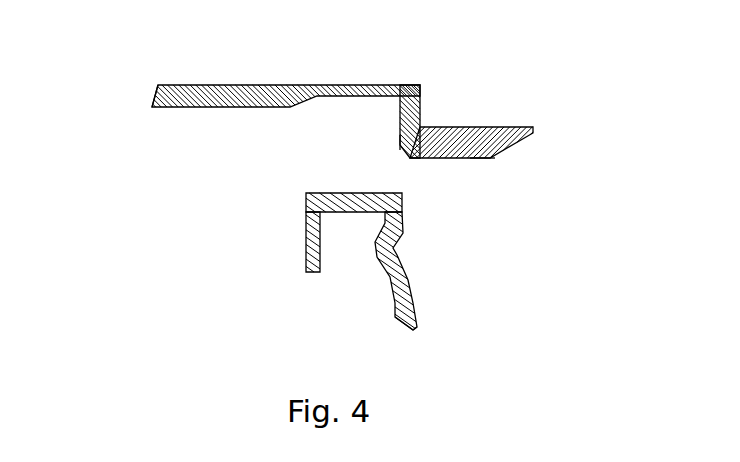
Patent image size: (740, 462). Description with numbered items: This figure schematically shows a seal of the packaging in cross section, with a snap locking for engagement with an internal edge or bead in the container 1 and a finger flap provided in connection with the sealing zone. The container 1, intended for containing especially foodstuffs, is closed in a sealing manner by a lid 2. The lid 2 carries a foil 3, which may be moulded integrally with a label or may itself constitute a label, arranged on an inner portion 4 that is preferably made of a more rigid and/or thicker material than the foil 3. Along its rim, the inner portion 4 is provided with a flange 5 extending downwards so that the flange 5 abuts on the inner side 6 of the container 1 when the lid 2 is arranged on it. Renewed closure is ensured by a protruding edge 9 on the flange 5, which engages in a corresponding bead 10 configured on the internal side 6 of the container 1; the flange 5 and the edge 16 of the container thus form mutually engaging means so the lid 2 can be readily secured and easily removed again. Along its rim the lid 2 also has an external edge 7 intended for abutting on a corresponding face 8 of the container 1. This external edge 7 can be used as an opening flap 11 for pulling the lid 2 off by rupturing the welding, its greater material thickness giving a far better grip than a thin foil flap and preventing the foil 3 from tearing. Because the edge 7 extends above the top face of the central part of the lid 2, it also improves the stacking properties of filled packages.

The container 1 is at (356, 237).
The lid 2 is at (457, 59).
The foil 3 is at (533, 129).
The inner portion 4 is at (490, 158).
The flange 5 is at (420, 107).
The inner side of the container 6 is at (413, 307).
The edge 7 is at (362, 86).
The face 8 is at (333, 193).
The protruding edge 9 is at (400, 145).
The bead 10 is at (400, 252).
The opening flap 11 is at (152, 100).
The edge or bead of the container 16 is at (308, 253).